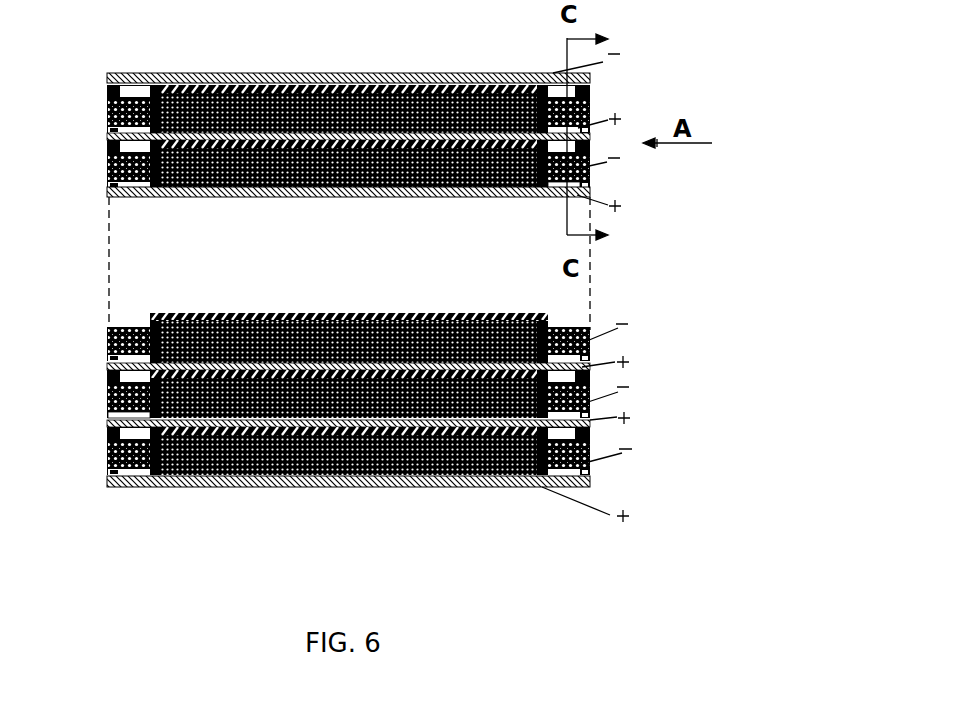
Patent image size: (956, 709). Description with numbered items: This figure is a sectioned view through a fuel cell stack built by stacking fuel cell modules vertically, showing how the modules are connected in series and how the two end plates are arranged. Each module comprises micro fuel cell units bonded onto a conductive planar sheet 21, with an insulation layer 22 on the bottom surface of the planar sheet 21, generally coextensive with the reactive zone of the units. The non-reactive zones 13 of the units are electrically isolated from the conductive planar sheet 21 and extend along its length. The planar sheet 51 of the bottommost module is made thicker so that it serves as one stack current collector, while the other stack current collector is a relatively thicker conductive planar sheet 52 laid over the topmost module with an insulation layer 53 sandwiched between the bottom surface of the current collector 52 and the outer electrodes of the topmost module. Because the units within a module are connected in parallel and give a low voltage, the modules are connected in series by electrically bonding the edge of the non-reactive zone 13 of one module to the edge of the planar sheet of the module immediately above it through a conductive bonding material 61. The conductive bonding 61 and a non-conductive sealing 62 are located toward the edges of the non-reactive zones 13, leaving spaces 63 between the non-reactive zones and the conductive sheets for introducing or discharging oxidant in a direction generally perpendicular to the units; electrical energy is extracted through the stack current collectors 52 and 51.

The non-reactive zone 13 is at (135, 190).
The conductive planar sheet 21 is at (352, 360).
The insulation layer 22 is at (272, 148).
The planar sheet of the bottommost module 51 is at (327, 486).
The conductive planar sheet 52 is at (398, 73).
The insulation layer 53 is at (318, 90).
The conductive bonding material 61 is at (588, 145).
The non-conductive sealing 62 is at (585, 185).
The spaces 63 is at (565, 189).